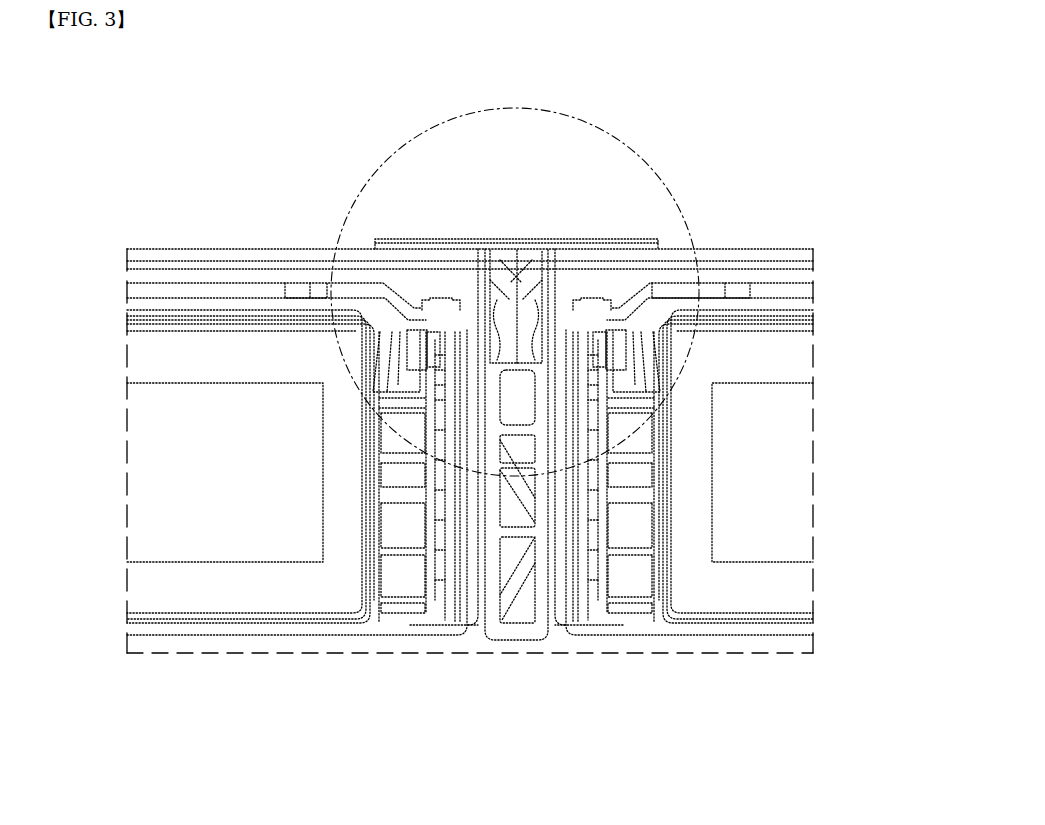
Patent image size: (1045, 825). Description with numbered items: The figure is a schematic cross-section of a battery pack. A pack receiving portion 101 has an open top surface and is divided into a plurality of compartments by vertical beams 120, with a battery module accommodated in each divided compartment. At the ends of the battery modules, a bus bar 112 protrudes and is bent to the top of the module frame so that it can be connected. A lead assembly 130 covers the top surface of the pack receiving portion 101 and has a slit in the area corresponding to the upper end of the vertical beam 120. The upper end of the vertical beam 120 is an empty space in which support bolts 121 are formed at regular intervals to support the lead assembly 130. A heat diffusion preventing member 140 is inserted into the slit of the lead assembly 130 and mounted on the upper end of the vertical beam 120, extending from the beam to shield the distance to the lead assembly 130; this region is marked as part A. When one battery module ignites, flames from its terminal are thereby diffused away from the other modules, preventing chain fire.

The pack receiving portion 101 is at (295, 645).
The bus bar 112 is at (752, 292).
The vertical beam 120 is at (549, 595).
The support bolt 121 is at (470, 248).
The lead assembly 130 is at (700, 250).
The heat diffusion preventing member 140 is at (528, 240).
The part A is at (650, 172).